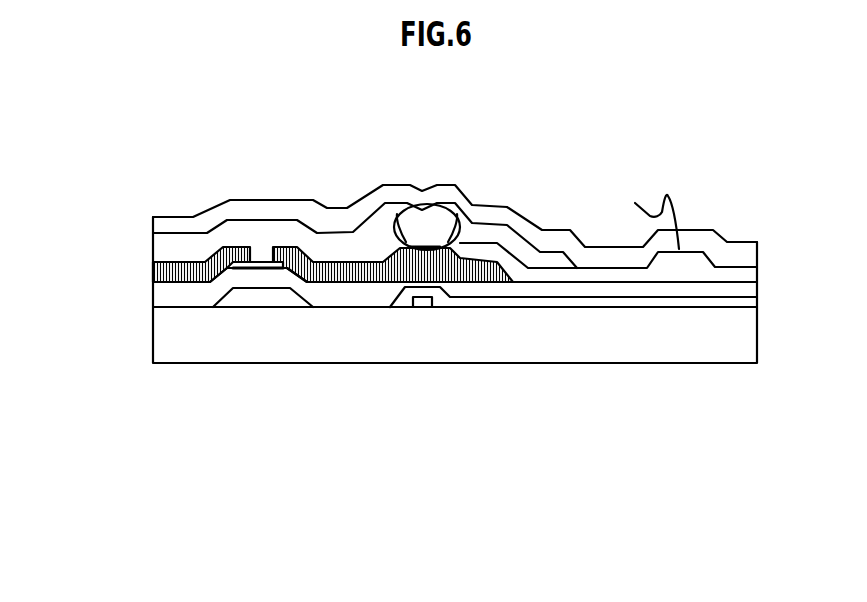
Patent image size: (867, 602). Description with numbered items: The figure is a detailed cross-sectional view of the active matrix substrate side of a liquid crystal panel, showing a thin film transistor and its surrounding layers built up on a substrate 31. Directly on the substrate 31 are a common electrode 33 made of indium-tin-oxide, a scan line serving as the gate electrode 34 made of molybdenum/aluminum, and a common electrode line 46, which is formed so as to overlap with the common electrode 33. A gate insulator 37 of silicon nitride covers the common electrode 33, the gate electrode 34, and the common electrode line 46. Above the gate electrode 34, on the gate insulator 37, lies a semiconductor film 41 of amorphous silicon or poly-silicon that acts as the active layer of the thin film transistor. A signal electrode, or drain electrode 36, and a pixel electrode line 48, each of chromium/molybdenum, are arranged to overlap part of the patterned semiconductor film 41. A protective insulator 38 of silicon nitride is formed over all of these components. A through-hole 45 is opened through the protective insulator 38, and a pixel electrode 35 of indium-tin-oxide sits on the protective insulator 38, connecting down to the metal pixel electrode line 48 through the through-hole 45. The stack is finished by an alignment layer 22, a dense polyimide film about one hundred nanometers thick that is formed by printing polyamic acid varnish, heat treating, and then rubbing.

The alignment layer 22 is at (267, 205).
The protective insulator 38 is at (197, 242).
The pixel electrode (source electrode) line 48 is at (393, 196).
The through-hole 45 is at (422, 207).
The pixel electrode (source electrode) 35 is at (608, 214).
The signal electrode (drain electrode) 36 is at (149, 262).
The gate insulator 37 is at (183, 287).
The scan line (gate electrode) 34 is at (253, 298).
The semiconductor film 41 is at (267, 268).
The common electrode line 46 is at (416, 300).
The substrate 31 is at (600, 343).
The common electrode 33 is at (700, 307).